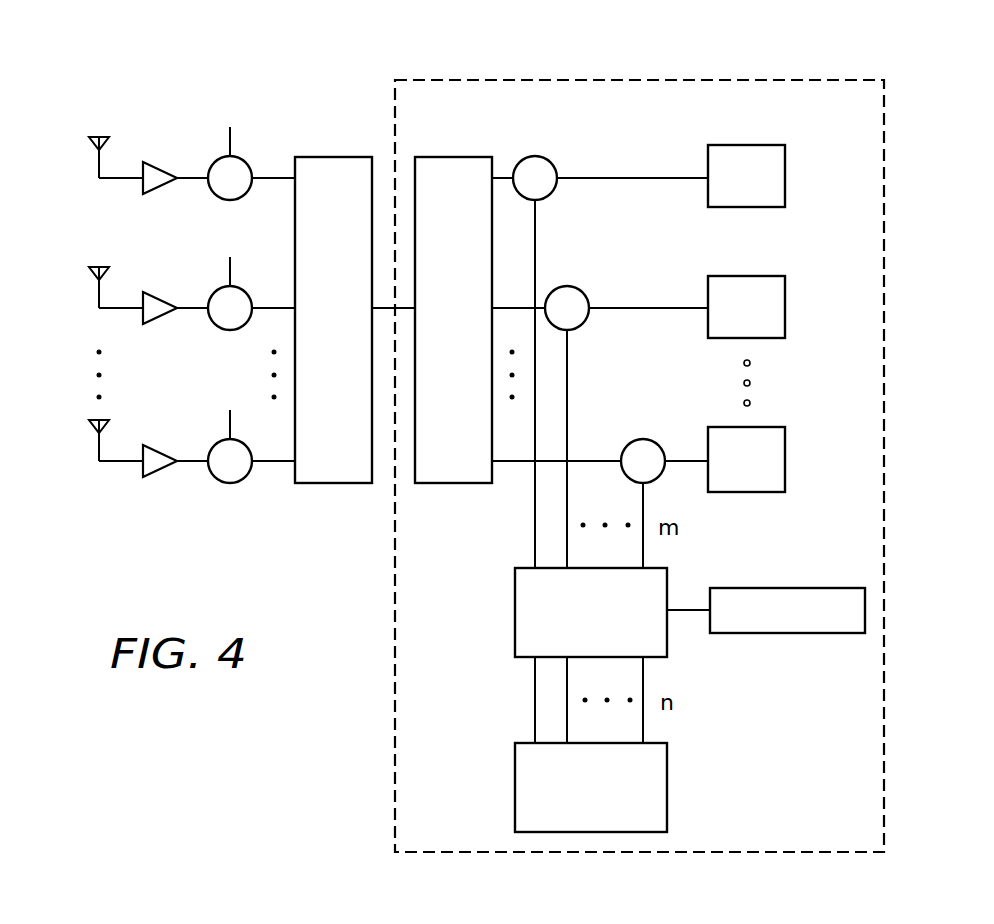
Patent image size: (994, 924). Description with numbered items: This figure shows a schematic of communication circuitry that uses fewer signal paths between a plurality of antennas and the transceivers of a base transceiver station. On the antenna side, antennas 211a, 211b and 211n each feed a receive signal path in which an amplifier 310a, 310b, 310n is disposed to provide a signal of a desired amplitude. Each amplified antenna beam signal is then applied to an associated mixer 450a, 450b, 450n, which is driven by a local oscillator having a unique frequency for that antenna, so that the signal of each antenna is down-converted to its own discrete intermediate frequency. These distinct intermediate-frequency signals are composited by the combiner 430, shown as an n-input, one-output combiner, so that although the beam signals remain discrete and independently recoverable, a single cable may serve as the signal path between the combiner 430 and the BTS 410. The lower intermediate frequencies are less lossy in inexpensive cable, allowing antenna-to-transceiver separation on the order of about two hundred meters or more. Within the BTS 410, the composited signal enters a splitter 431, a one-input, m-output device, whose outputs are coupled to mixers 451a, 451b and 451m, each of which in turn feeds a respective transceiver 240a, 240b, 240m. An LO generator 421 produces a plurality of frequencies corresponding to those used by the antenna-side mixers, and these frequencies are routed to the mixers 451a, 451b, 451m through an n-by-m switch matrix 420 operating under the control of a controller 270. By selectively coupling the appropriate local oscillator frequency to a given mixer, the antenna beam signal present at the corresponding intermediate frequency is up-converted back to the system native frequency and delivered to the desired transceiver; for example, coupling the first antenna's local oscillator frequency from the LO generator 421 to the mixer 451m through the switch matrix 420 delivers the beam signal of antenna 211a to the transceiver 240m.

The antenna 211a is at (93, 147).
The antenna 211b is at (93, 277).
The antenna 211n is at (93, 429).
The amplifier 310a is at (178, 145).
The amplifier 310b is at (178, 275).
The amplifier 310n is at (162, 477).
The mixer 450a is at (214, 194).
The mixer 450b is at (214, 324).
The mixer 450n is at (245, 482).
The combiner 430 is at (315, 333).
The splitter 431 is at (434, 333).
The mixer 451a is at (546, 157).
The mixer 451b is at (582, 292).
The mixer 451m is at (644, 437).
The transceiver 240a is at (749, 144).
The transceiver 240b is at (749, 275).
The transceiver 240m is at (752, 493).
The BTS 410 is at (395, 628).
The switch matrix 420 is at (515, 617).
The LO generator 421 is at (571, 803).
The controller 270 is at (787, 634).